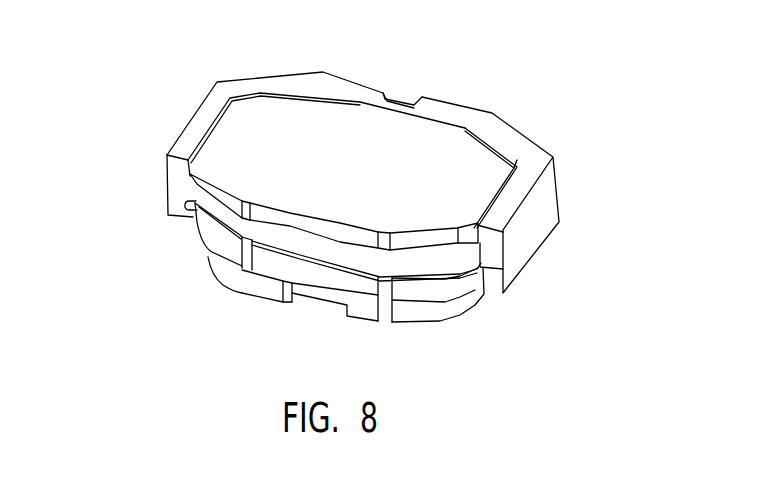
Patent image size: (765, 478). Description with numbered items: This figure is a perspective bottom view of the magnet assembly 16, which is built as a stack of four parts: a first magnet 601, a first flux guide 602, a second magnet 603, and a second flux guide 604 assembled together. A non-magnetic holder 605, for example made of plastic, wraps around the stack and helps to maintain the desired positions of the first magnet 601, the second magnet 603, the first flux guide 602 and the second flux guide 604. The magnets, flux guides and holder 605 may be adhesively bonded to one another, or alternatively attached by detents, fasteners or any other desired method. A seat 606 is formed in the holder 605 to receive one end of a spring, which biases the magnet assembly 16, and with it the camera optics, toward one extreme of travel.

The magnet assembly 16 is at (135, 267).
The first magnet 601 is at (416, 321).
The first flux guide 602 is at (318, 274).
The second magnet 603 is at (270, 231).
The second flux guide 604 is at (459, 149).
The holder 605 is at (205, 98).
The seat 606 is at (400, 100).